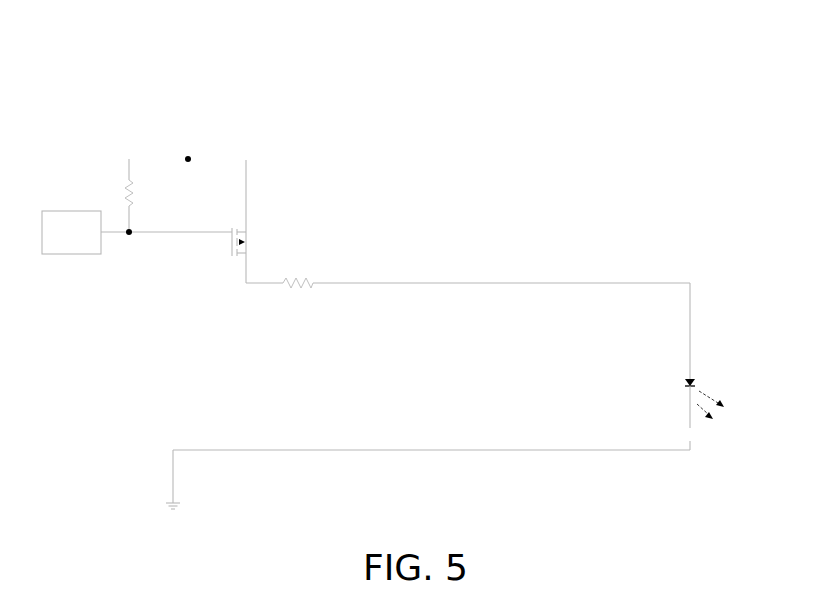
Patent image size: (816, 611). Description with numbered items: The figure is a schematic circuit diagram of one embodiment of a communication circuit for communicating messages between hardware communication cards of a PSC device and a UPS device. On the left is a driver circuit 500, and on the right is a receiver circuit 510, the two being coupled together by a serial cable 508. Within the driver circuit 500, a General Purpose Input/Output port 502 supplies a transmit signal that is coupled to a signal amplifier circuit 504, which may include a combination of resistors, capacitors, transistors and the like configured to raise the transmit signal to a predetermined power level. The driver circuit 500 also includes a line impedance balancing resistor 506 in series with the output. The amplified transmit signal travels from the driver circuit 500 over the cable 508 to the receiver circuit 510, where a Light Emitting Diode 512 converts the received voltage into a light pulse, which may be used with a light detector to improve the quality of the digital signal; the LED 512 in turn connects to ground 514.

The driver circuit 500 is at (70, 59).
The General Purpose Input/Output (GPIO) port 502 is at (72, 210).
The signal amplifier circuit 504 is at (246, 160).
The line impedance balancing resistor 506 is at (302, 287).
The RS-485 cable 508 is at (690, 283).
The receiver circuit 510 is at (664, 182).
The Light Emitting Diode (LED) 512 is at (690, 383).
The ground 514 is at (173, 505).